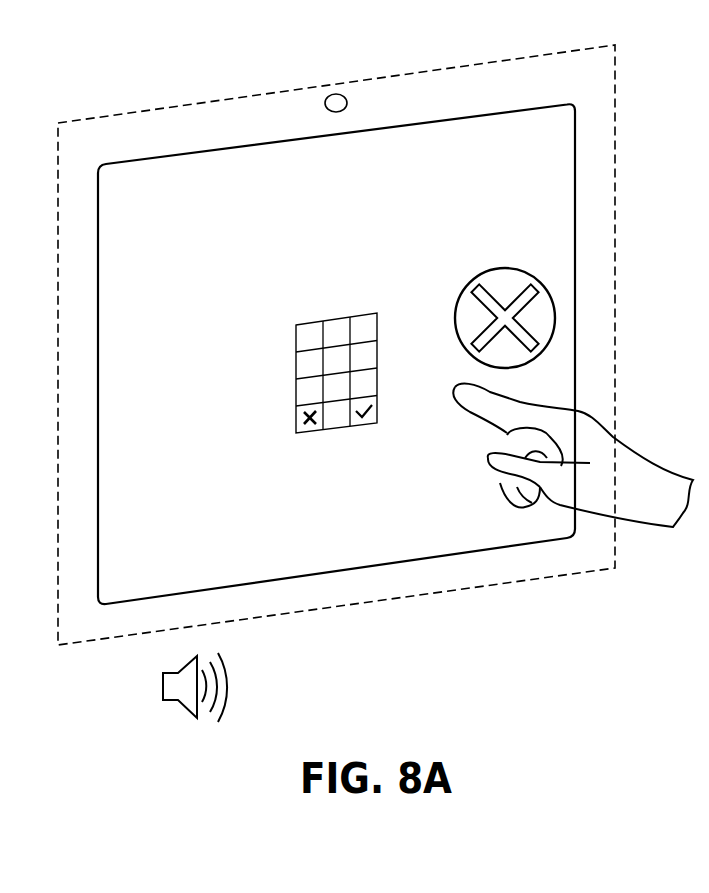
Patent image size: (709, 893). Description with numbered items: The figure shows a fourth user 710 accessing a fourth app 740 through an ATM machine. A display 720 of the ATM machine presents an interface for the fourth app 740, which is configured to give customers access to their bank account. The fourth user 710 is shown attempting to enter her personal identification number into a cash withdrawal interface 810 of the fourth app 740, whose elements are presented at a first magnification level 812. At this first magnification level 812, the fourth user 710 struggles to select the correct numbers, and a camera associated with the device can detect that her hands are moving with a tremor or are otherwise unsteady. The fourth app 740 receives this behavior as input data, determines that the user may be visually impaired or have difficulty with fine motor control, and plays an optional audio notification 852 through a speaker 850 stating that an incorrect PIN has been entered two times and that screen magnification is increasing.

The fourth user 710 is at (640, 497).
The display 720 is at (575, 193).
The fourth app 740 is at (203, 205).
The cash withdrawal interface 810 is at (428, 185).
The first magnification level 812 is at (268, 368).
The speaker / audio output 850 is at (198, 737).
The audio notification 852 is at (574, 683).